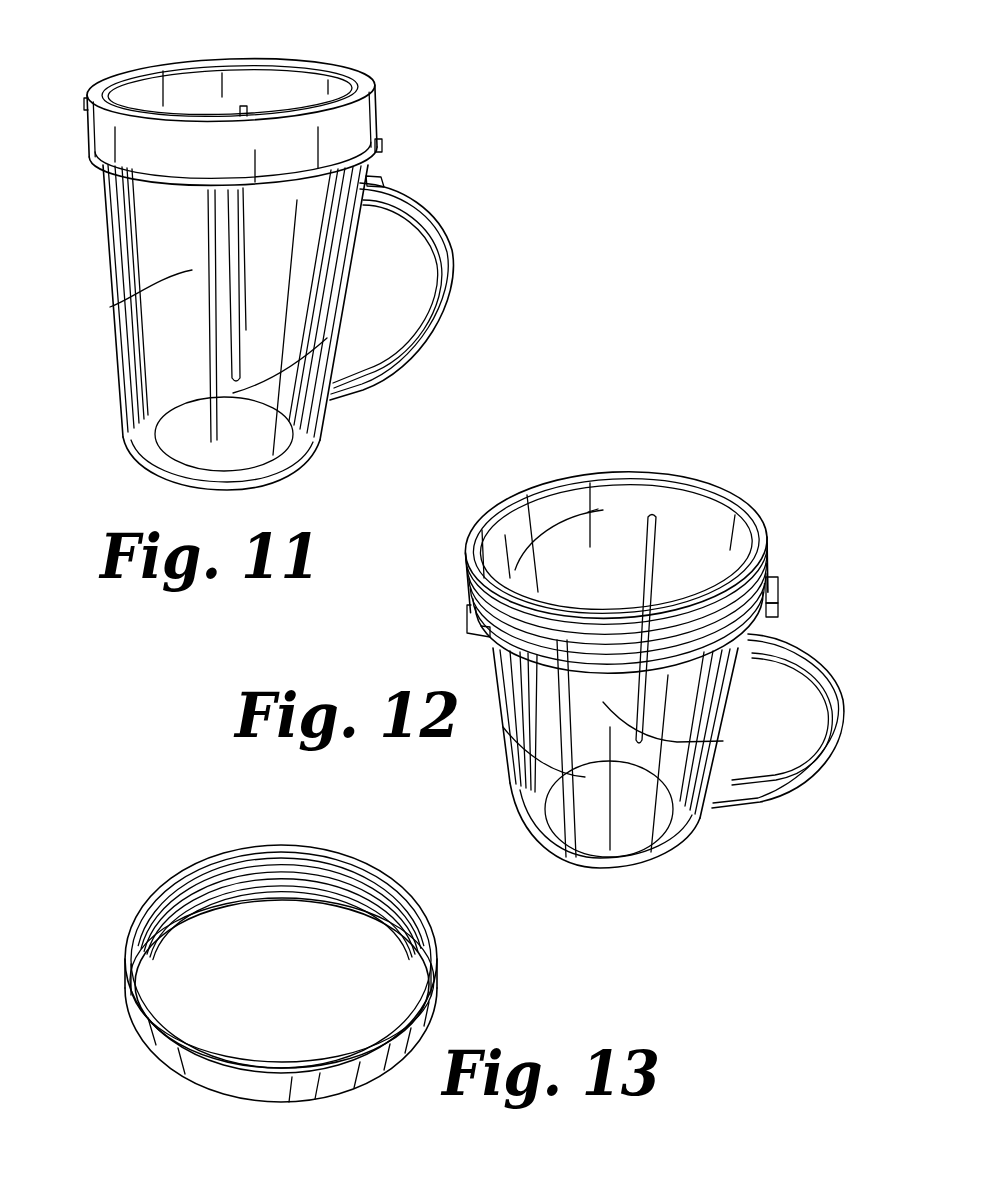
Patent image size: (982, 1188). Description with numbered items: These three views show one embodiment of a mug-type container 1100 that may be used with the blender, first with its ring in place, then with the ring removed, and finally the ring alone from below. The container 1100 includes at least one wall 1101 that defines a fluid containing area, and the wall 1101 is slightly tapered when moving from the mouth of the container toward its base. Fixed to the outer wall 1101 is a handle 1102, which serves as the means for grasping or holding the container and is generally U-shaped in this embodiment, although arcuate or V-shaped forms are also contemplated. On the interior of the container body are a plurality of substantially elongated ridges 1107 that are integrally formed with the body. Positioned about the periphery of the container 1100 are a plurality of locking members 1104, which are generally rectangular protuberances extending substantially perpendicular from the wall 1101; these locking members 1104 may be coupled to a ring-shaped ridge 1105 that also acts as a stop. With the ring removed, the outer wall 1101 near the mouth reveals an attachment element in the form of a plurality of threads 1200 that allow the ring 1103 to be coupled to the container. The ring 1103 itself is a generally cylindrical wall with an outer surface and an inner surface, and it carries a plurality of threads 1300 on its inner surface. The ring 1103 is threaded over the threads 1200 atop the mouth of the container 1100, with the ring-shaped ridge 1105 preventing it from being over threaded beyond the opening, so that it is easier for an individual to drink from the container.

In FIG. 11, the mug-type container 1100 is at (301, 259).
In FIG. 12, the mug-type container 1100 is at (622, 635).
In FIG. 11, the wall 1101 is at (160, 379).
In FIG. 12, the wall 1101 is at (533, 786).
In FIG. 11, the handle 1102 is at (455, 238).
In FIG. 12, the handle 1102 is at (780, 806).
In FIG. 11, the ring 1103 is at (381, 112).
In FIG. 13, the ring 1103 is at (281, 980).
In FIG. 11, the locking members 1104 is at (385, 148).
In FIG. 12, the locking members 1104 is at (774, 590).
In FIG. 11, the ring-shaped ridge 1105 is at (384, 170).
In FIG. 12, the ring-shaped ridge 1105 is at (773, 623).
In FIG. 11, the elongated ridges 1107 is at (215, 428).
In FIG. 12, the elongated ridges 1107 is at (650, 517).
In FIG. 12, the threads 1200 is at (777, 554).
In FIG. 13, the threads 1300 is at (245, 880).